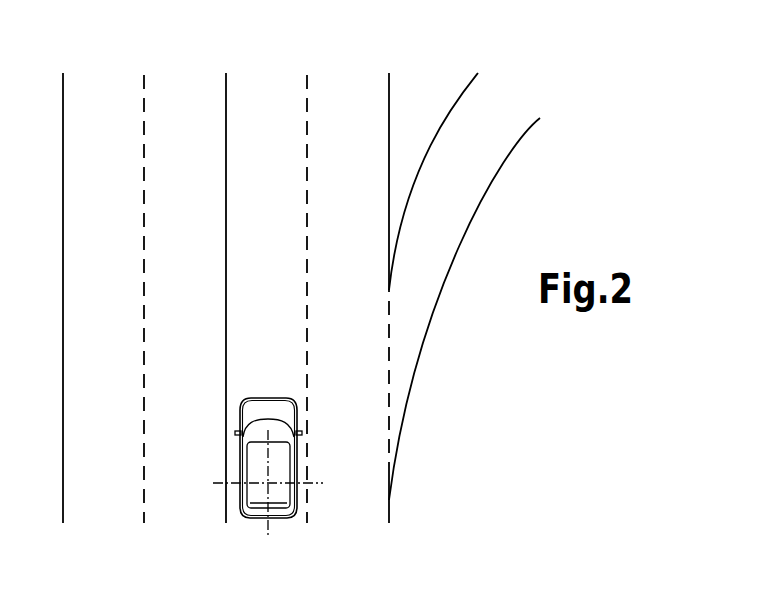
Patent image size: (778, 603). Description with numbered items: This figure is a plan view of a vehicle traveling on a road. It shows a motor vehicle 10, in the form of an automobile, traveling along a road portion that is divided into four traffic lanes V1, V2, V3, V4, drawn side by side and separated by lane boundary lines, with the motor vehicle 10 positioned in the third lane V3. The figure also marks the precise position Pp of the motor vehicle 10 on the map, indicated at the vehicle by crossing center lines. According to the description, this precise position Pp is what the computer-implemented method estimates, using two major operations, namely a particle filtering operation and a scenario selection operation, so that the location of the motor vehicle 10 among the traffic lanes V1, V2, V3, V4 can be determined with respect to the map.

The motor vehicle 10 is at (315, 469).
The precise position Pp is at (267, 482).
The traffic lane V1 is at (110, 92).
The traffic lane V2 is at (192, 92).
The traffic lane V3 is at (270, 92).
The traffic lane V4 is at (348, 92).